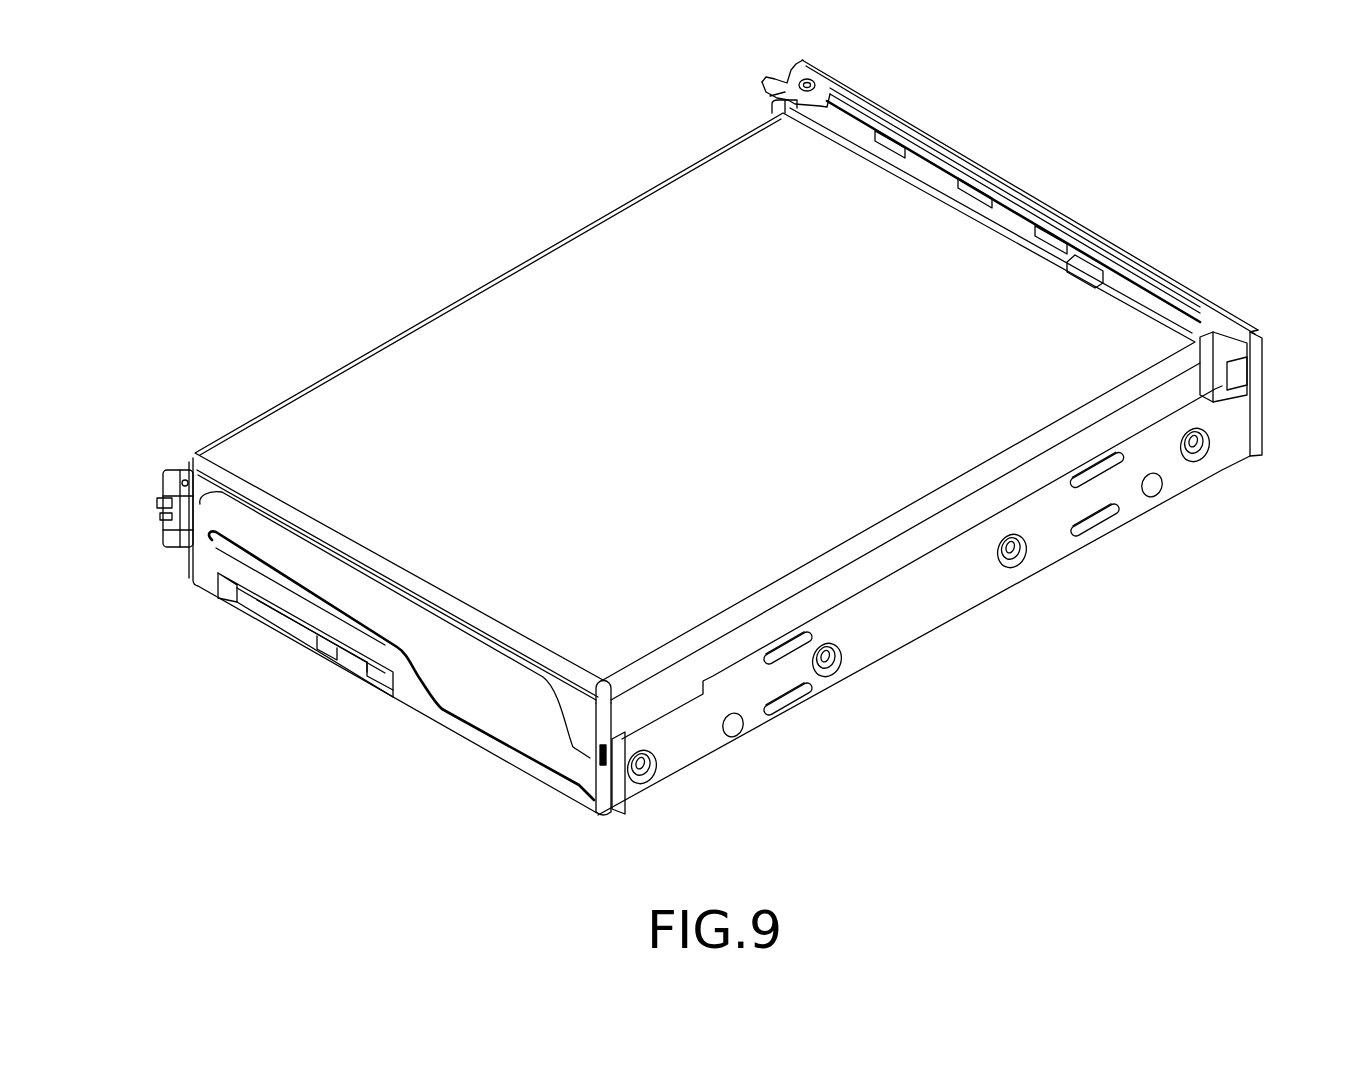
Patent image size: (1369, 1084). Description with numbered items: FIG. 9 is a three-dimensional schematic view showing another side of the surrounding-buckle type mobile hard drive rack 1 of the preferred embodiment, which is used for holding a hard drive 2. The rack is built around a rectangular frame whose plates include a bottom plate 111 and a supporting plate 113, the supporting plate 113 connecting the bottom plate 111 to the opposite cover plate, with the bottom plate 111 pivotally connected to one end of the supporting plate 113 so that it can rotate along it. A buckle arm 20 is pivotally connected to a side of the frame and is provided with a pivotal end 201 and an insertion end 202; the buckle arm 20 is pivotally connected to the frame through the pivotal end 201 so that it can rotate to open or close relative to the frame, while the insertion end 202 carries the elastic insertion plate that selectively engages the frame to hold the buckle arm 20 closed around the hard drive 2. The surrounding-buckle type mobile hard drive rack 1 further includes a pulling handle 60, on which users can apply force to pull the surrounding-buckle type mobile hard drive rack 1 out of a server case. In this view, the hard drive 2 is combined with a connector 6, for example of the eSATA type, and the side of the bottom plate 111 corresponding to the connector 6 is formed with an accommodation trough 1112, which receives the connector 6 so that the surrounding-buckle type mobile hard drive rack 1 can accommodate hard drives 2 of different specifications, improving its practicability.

The surrounding-buckle type mobile hard drive rack 1 is at (1078, 170).
The hard drive 2 is at (455, 313).
The connector 6 is at (257, 607).
The buckle arm 20 is at (972, 610).
The pulling handle 60 is at (1143, 280).
The bottom plate 111 is at (470, 695).
The supporting plate 113 is at (182, 468).
The pivotal end 201 is at (654, 792).
The insertion end 202 is at (1260, 432).
The accommodation trough 1112 is at (320, 620).